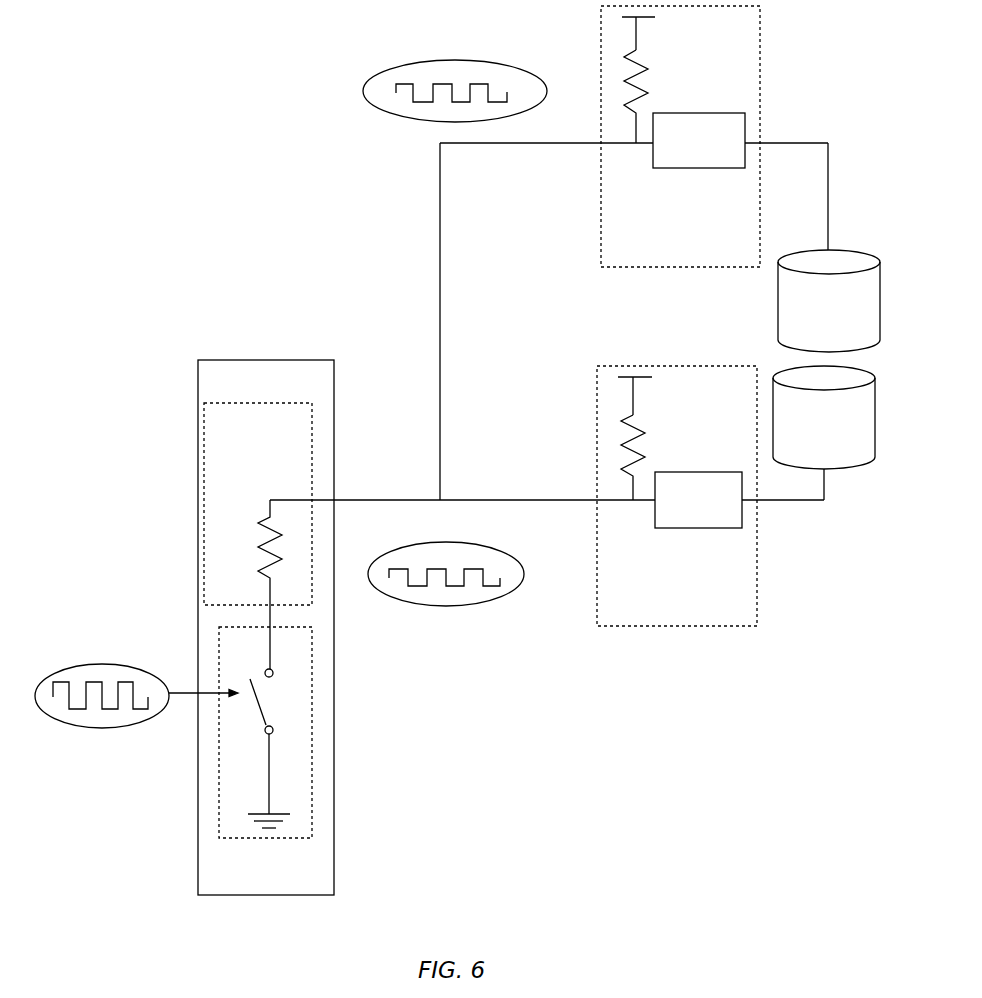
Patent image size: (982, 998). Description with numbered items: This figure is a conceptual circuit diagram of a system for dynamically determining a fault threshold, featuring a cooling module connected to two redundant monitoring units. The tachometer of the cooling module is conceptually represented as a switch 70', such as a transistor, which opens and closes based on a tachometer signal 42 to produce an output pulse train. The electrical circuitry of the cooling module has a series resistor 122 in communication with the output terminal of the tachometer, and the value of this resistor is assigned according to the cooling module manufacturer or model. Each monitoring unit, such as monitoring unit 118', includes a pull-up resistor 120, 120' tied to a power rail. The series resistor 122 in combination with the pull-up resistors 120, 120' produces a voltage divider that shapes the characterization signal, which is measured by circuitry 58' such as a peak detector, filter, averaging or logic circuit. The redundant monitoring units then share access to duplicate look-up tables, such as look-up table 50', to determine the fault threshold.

The tachometer signal 42 is at (110, 665).
The look-up table 50' is at (829, 301).
The circuitry 58' is at (699, 140).
The switch 70' is at (252, 712).
The monitoring unit 118' is at (695, 136).
The pull-up resistor 120 is at (605, 96).
The pull-up resistor 120' is at (601, 457).
The series resistor 122 is at (257, 547).